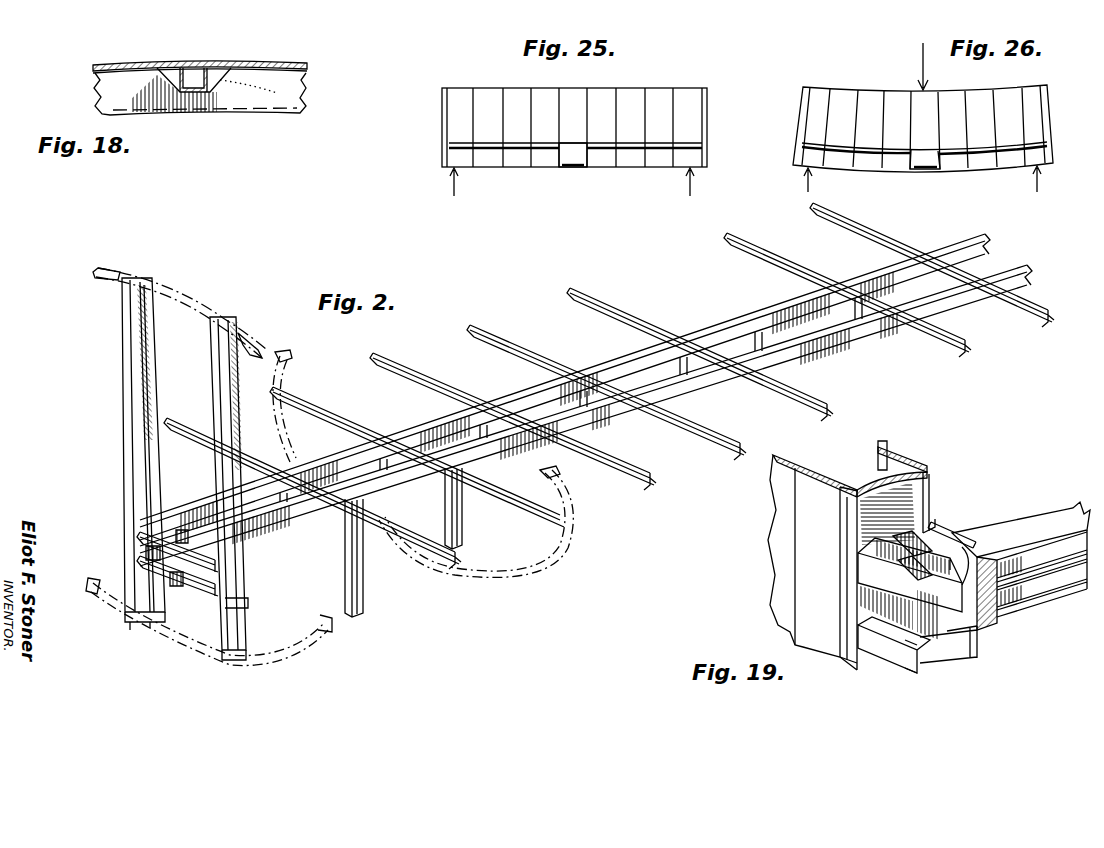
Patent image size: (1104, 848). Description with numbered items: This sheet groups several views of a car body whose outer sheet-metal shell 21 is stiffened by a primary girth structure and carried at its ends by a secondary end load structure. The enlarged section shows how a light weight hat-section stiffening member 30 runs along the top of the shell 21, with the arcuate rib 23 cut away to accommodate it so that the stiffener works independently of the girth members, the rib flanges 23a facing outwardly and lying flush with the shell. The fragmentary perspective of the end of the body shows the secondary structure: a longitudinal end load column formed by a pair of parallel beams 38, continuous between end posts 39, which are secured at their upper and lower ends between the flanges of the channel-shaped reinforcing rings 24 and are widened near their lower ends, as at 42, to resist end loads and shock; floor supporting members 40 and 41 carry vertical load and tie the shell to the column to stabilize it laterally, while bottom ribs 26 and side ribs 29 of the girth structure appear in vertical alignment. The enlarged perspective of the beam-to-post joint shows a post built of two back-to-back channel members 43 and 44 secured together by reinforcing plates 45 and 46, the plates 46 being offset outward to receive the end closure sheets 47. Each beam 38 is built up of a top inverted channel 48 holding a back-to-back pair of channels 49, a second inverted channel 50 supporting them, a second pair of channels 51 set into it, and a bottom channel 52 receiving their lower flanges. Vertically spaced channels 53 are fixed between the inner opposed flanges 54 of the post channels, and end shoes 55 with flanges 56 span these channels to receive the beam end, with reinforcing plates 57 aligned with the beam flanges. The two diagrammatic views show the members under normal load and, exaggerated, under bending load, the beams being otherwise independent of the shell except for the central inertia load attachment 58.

In FIG. 18, the outer sheet-metal shell 21 is at (150, 63).
In FIG. 18, the arcuate ribs 23 is at (248, 77).
In FIG. 18, the rib flanges 23a is at (282, 72).
In FIG. 18, the stiffening members 30 is at (197, 66).
In FIG. 25, the inertia load attachment 58 is at (581, 176).
In FIG. 26, the inertia load attachment 58 is at (924, 176).
In FIG. 2, the reinforcing rings 24 is at (203, 298).
In FIG. 2, the ribs 26 is at (490, 572).
In FIG. 2, the ribs 29 is at (283, 353).
In FIG. 2, the end load column members 38 is at (728, 319).
In FIG. 19, the end load column members 38 is at (1021, 568).
In FIG. 2, the end posts 39 is at (119, 414).
In FIG. 19, the end posts 39 is at (882, 455).
In FIG. 2, the floor supporting members 40 is at (353, 407).
In FIG. 2, the floor supporting members 41 is at (461, 527).
In FIG. 2, the widened portion of end post 42 is at (248, 605).
In FIG. 19, the channel member of end post 43 is at (852, 480).
In FIG. 19, the channel member of end post 44 is at (926, 485).
In FIG. 19, the reinforcing plates 45 is at (900, 455).
In FIG. 19, the reinforcing plates 46 is at (812, 562).
In FIG. 19, the end closure sheets 47 is at (793, 456).
In FIG. 19, the top inverted channel 48 is at (1040, 520).
In FIG. 19, the channels 49 is at (1012, 582).
In FIG. 19, the second inverted channel 50 is at (1040, 586).
In FIG. 19, the second pair of channels 51 is at (1062, 592).
In FIG. 19, the bottom channel 52 is at (1022, 612).
In FIG. 2, the vertically spaced channels 53 is at (150, 565).
In FIG. 19, the vertically spaced channels 53 is at (885, 573).
In FIG. 19, the inner opposed flanges 54 is at (932, 500).
In FIG. 19, the end shoes 55 is at (952, 538).
In FIG. 19, the flanges of end shoes 56 is at (987, 593).
In FIG. 2, the reinforcing plates 57 is at (190, 537).
In FIG. 19, the reinforcing plates 57 is at (898, 538).